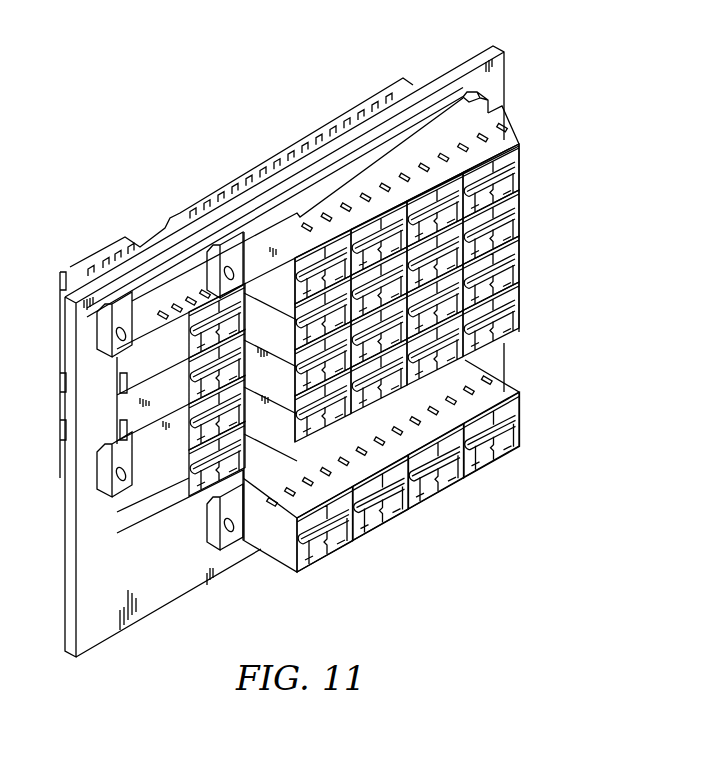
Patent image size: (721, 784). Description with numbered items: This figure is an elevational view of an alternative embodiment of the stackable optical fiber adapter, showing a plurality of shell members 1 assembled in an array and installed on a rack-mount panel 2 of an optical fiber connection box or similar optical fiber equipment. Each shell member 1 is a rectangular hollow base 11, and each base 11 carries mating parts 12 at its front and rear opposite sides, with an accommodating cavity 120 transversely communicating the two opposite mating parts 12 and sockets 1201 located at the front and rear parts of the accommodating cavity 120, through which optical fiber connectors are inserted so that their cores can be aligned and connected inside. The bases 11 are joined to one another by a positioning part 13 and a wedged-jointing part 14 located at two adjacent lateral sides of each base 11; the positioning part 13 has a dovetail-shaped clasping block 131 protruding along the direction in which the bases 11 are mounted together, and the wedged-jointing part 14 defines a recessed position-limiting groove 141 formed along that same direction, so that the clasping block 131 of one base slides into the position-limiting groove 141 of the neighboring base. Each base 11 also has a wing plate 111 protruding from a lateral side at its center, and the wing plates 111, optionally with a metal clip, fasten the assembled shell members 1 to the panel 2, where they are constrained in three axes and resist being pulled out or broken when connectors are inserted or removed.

The shell member 1 is at (532, 141).
The rack-mount panel 2 is at (90, 545).
The base 11 is at (325, 297).
The wing plate 111 is at (467, 94).
The mating part 12 is at (521, 211).
The accommodating cavity 120 is at (515, 245).
The socket 1201 is at (511, 231).
The positioning part 13 is at (318, 170).
The clasping block 131 is at (420, 156).
The wedged-jointing part 14 is at (245, 172).
The position-limiting groove 141 is at (420, 156).